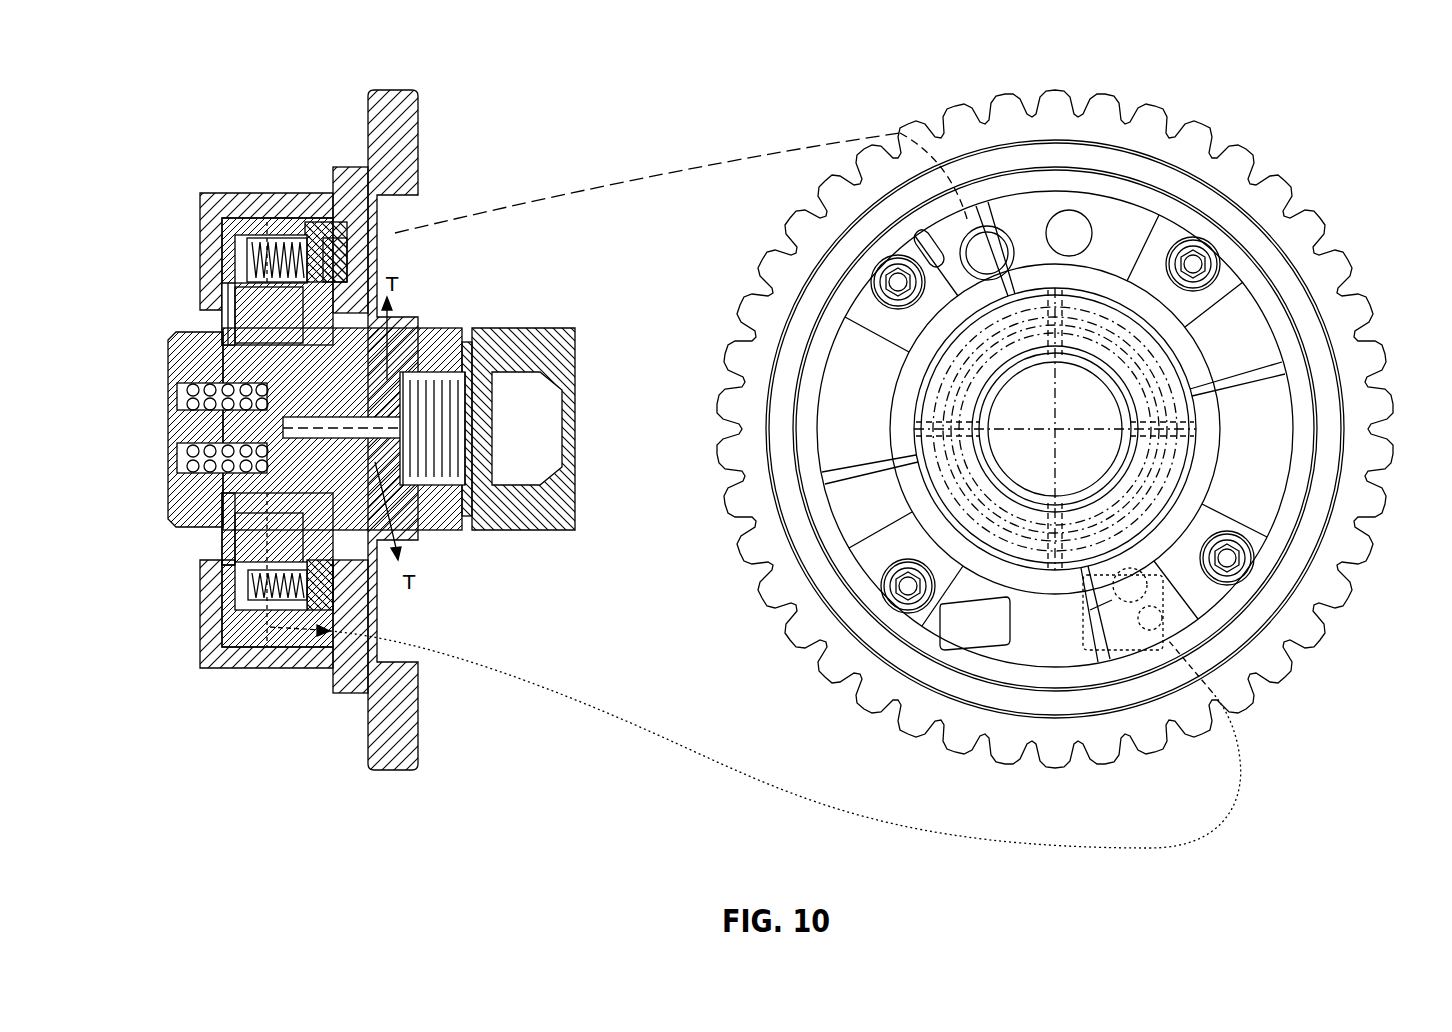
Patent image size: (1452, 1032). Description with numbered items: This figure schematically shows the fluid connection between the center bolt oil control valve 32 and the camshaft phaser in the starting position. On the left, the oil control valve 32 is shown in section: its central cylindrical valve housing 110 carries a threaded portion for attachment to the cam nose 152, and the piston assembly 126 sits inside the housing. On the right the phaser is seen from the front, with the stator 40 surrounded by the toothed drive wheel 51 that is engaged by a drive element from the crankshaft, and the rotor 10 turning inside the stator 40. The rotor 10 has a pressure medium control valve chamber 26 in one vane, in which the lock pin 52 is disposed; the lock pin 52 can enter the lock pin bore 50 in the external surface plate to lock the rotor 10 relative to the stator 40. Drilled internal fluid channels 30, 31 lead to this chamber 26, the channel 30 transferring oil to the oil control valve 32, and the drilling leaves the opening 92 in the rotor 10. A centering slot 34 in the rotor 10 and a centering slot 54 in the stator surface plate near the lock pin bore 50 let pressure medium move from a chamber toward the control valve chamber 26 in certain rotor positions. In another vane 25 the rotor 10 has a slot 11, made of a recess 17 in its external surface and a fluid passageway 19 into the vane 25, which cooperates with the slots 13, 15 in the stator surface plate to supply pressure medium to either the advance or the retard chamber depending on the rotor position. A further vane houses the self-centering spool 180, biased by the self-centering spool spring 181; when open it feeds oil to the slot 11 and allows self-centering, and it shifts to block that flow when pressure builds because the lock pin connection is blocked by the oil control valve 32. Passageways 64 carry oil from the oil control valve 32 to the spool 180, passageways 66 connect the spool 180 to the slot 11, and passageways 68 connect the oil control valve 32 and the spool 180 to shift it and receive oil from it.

The rotor 10 is at (1238, 472).
The slot 11 is at (310, 643).
The slot 13 is at (1183, 607).
The slot 15 is at (975, 640).
The recess 17 is at (1107, 623).
The fluid passageway 19 is at (1153, 623).
The vane 25 is at (238, 623).
The pressure medium control valve chamber 26 is at (287, 238).
The internal fluid channel 30 is at (222, 313).
The channel 31 is at (232, 295).
The center bolt oil control valve 32 is at (565, 298).
The centering slot 34 is at (937, 237).
The stator 40 is at (1313, 423).
The lock pin bore 50 is at (345, 262).
The drive wheel 51 is at (396, 94).
The lock pin 52 is at (343, 247).
The centering slot 54 is at (1026, 215).
The passageway 64 is at (238, 533).
The passageway 66 is at (280, 667).
The passageway 68 is at (327, 548).
The opening 92 is at (318, 232).
The valve housing 110 is at (178, 500).
The piston assembly 126 is at (158, 405).
The cam nose 152 is at (545, 530).
The self-centering spool 180 is at (192, 600).
The self-centering spool spring 181 is at (227, 595).